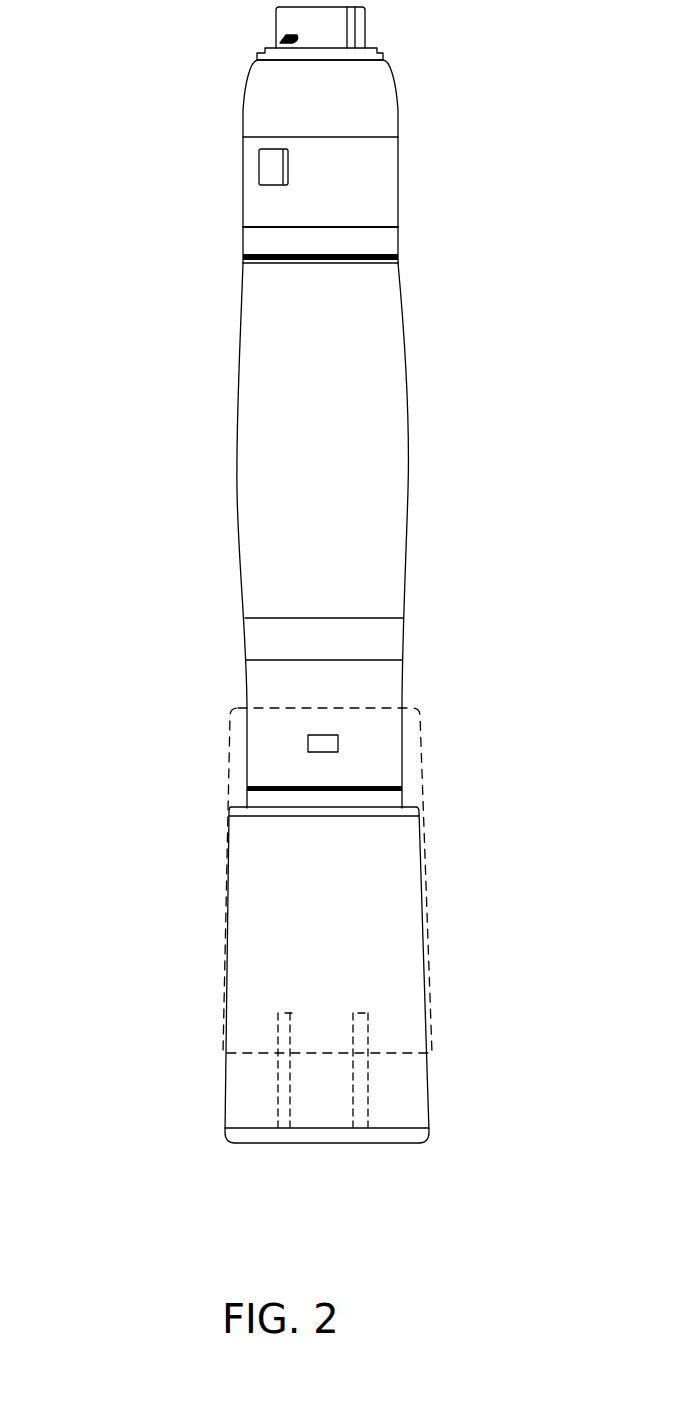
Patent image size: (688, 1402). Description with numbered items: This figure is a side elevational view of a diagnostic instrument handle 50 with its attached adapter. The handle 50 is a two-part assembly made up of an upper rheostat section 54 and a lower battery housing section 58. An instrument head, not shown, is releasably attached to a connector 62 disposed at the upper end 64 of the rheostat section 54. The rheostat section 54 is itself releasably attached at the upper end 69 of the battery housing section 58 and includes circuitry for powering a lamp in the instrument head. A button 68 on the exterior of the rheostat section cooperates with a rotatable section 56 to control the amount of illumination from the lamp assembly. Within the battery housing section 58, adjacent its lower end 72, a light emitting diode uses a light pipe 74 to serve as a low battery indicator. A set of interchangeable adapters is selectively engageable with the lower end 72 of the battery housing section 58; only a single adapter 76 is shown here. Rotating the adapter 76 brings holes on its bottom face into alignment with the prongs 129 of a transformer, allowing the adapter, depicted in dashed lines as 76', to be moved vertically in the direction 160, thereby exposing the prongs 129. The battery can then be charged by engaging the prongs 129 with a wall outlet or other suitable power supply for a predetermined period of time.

The diagnostic instrument handle 50 is at (167, 402).
The upper rheostat section 54 is at (420, 183).
The rotatable section 56 is at (250, 200).
The lower battery housing section 58 is at (372, 483).
The connector 62 is at (302, 23).
The upper end of the rheostat section 64 is at (378, 52).
The button 68 is at (268, 163).
The upper end of the battery housing 69 is at (387, 266).
The lower end of the battery housing section 72 is at (253, 800).
The light pipe 74 is at (323, 743).
The adapter 76 is at (374, 975).
The adapter in moved position 76' is at (282, 875).
The prongs 129 is at (277, 1088).
The direction of movement 160 is at (480, 848).